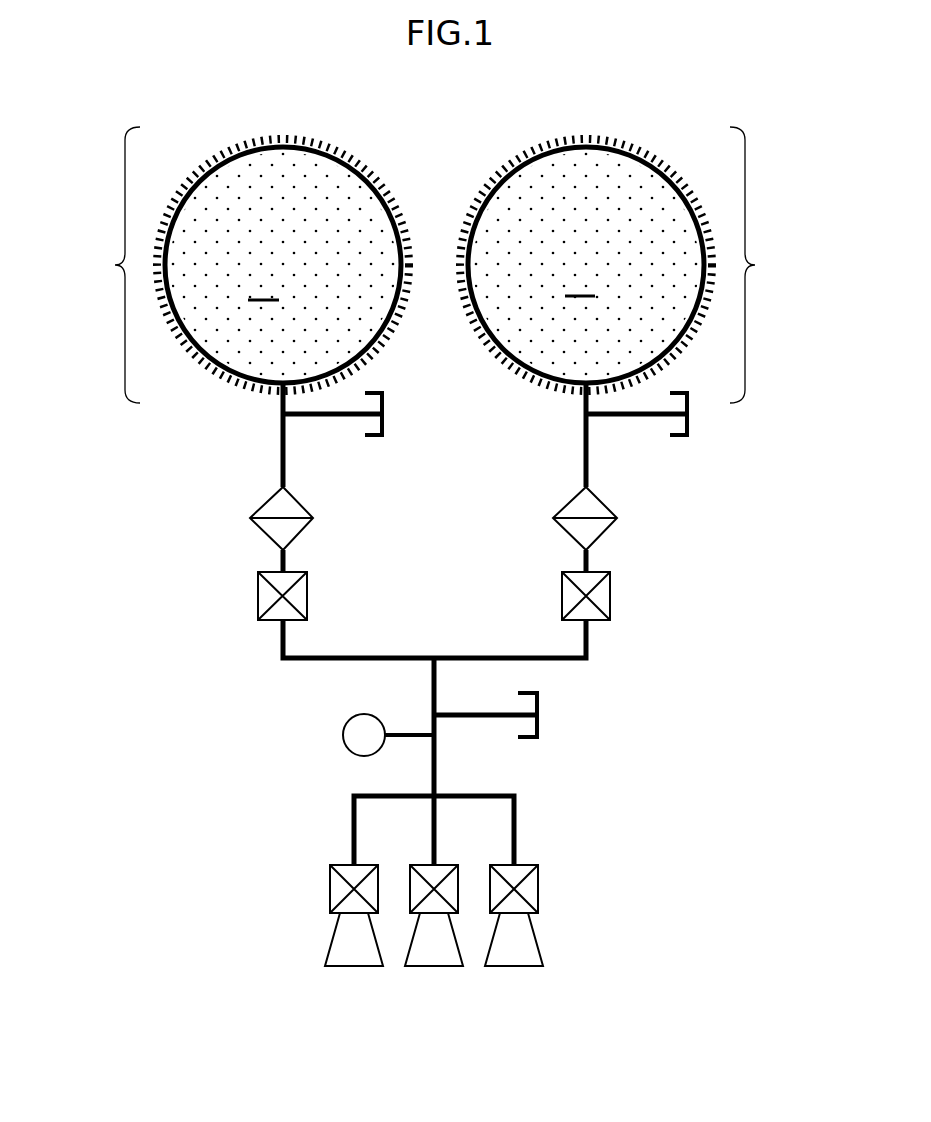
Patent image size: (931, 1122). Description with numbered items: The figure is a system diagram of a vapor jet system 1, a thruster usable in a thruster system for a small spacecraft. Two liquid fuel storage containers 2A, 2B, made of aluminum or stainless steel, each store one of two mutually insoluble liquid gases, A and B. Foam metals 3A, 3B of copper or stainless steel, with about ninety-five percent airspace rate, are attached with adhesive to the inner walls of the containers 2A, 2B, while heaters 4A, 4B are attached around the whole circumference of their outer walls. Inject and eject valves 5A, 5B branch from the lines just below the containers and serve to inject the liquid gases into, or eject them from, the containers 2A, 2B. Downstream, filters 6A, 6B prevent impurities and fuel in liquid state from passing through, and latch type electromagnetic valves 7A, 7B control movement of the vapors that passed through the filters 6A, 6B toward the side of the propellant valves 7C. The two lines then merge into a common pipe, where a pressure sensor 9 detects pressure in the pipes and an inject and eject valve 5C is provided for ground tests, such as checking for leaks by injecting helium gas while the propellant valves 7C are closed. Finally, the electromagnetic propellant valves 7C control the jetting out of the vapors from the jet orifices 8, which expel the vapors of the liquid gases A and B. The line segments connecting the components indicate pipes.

The vapor jet system 1 is at (687, 833).
The liquid fuel storage container 2A is at (243, 239).
The liquid fuel storage container 2B is at (627, 239).
The foam metal 3A is at (312, 220).
The foam metal 3B is at (625, 220).
The heater 4A is at (281, 140).
The heater 4B is at (591, 140).
The inject and eject valve 5A is at (386, 430).
The inject and eject valve 5B is at (690, 430).
The inject and eject valve 5C is at (545, 728).
The filter 6A is at (303, 503).
The filter 6B is at (608, 503).
The latch type electromagnetic valve 7A is at (308, 596).
The latch type electromagnetic valve 7B is at (611, 596).
The propellant valves 7C is at (313, 866).
The jet orifices 8 is at (563, 972).
The pressure sensor 9 is at (345, 726).